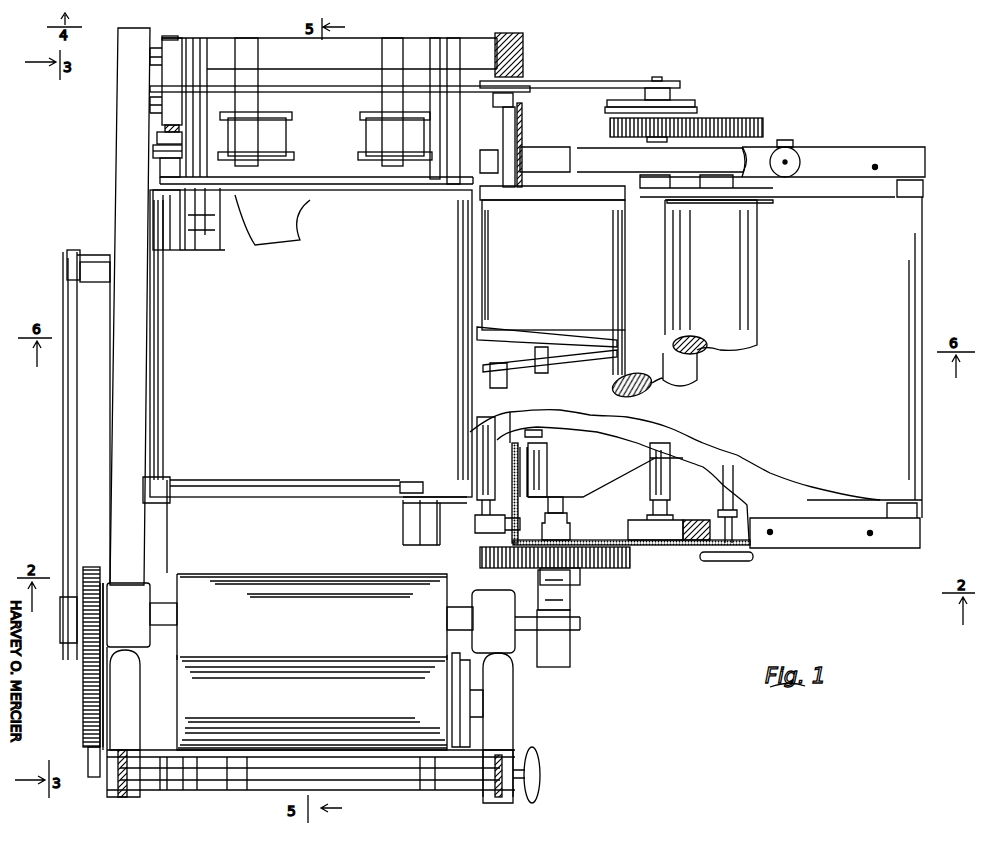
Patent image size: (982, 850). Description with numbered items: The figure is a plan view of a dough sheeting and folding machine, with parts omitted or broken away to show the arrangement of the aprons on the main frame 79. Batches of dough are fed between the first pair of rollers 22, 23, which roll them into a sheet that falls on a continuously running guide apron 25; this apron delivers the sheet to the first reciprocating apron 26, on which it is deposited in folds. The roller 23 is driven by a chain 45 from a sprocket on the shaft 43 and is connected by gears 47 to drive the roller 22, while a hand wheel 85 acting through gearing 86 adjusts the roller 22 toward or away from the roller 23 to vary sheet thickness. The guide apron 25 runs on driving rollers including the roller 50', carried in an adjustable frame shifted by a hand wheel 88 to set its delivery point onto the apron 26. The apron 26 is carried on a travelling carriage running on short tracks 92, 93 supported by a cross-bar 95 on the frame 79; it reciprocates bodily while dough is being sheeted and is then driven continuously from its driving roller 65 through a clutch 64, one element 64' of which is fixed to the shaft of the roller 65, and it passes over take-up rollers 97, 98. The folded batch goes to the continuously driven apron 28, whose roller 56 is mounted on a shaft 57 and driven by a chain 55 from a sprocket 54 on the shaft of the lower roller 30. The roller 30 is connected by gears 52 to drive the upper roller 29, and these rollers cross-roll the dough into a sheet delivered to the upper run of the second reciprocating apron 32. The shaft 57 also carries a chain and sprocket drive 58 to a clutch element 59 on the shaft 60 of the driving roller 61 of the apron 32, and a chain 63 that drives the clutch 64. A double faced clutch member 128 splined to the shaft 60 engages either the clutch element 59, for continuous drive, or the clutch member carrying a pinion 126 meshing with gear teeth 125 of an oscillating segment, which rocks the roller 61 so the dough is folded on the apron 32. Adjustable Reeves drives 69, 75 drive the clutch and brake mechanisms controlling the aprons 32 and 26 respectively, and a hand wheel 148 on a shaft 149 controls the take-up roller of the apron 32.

The roller 22 is at (330, 690).
The roller 23 is at (300, 600).
The guide apron 25 is at (273, 505).
The reciprocating apron 26 is at (348, 225).
The apron 28 is at (592, 265).
The roller 29 is at (740, 325).
The roller 30 is at (690, 385).
The reciprocating apron 32 is at (892, 447).
The shaft 43 is at (100, 270).
The chain 45 is at (70, 490).
The gears 47 is at (88, 660).
The roller 50' is at (420, 497).
The gears 52 is at (700, 125).
The sprocket 54 is at (680, 78).
The chain 55 is at (565, 80).
The roller 56 is at (520, 370).
The shaft 57 is at (522, 133).
The chain and sprocket drive 58 is at (560, 630).
The clutch member 59 is at (585, 622).
The shaft 60 is at (566, 512).
The driving roller 61 is at (566, 497).
The chain 63 is at (300, 92).
The clutch 64 is at (127, 124).
The clutch element 64' is at (125, 152).
The driving roller 65 is at (163, 205).
The adjustable Reeves drive 69 is at (372, 135).
The adjustable Reeves drive 75 is at (283, 135).
The main frame 79 is at (125, 378).
The hand wheel 85 is at (535, 755).
The gearing 86 is at (125, 795).
The hand wheel 88 is at (92, 775).
The track 92 is at (203, 45).
The track 93 is at (456, 50).
The cross-bar 95 is at (352, 55).
The take-up roller 97 is at (195, 205).
The take-up roller 98 is at (200, 215).
The gear teeth 125 is at (631, 566).
The pinion 126 is at (590, 570).
The double faced clutch member 128 is at (575, 580).
The hand wheel 148 is at (750, 560).
The shaft 149 is at (723, 485).